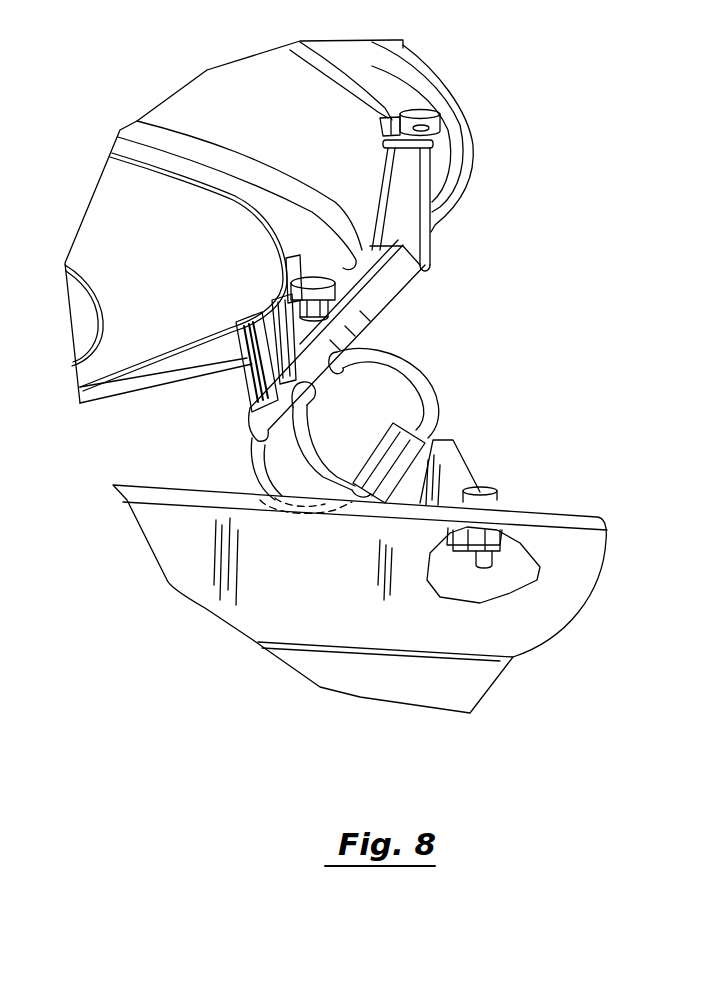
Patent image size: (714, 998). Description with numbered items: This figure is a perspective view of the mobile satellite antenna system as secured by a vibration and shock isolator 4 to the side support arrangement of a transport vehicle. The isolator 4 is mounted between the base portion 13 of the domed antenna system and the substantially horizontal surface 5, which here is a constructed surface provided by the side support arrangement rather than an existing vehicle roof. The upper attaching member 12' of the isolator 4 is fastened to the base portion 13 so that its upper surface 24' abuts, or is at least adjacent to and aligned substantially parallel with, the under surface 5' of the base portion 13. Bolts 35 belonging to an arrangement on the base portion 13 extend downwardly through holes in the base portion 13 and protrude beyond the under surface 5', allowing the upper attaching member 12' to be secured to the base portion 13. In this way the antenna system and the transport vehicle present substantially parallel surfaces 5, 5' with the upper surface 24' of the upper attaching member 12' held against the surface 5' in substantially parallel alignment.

The base portion 13 is at (326, 221).
The vibration and shock isolator 4 is at (460, 369).
The substantially horizontal surface 5 is at (360, 575).
The under surface of the base portion 5' is at (317, 268).
The upper surface of the upper attaching member 24' is at (246, 268).
The upper attaching member 12' is at (237, 363).
The bolts 35 is at (322, 297).